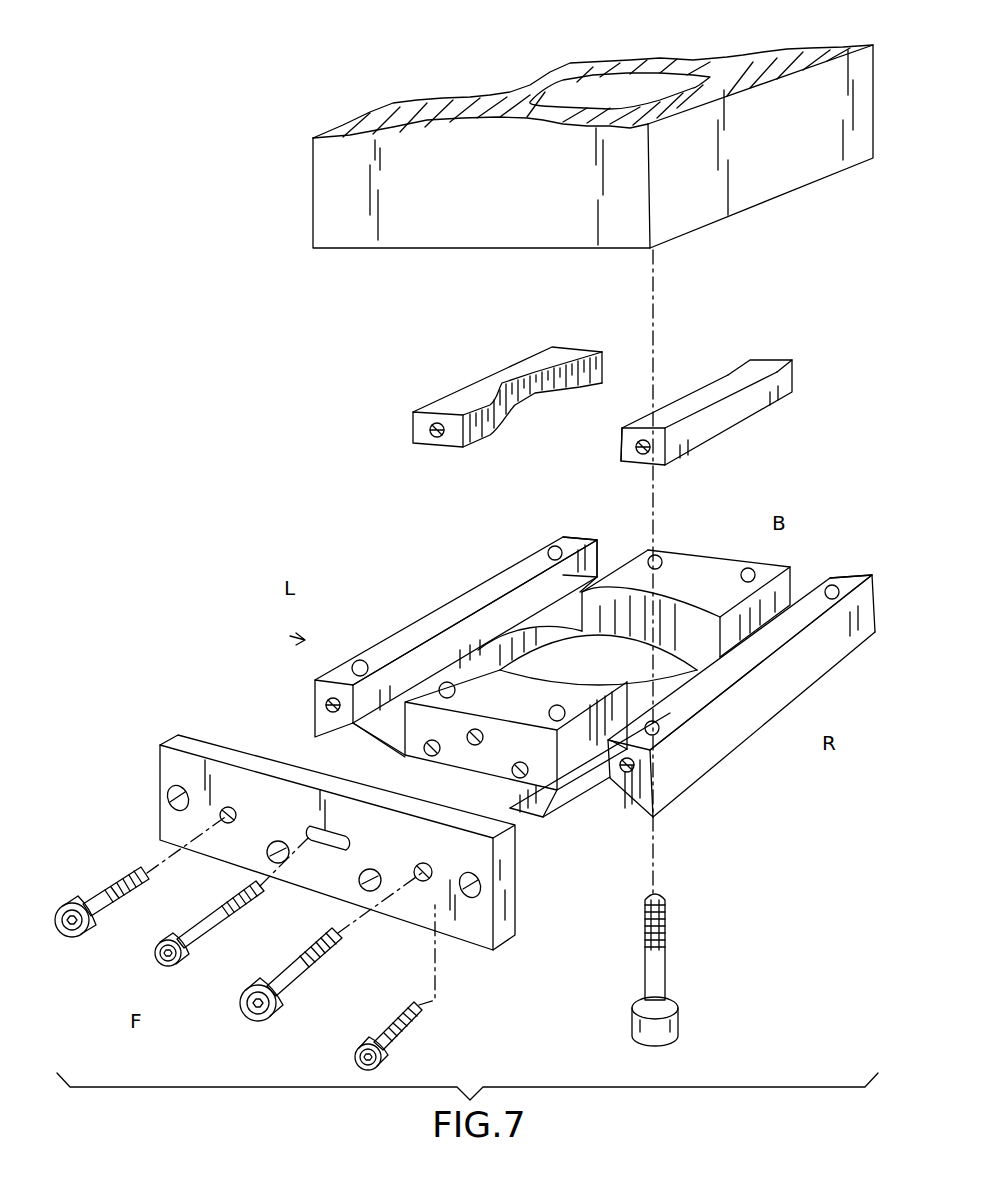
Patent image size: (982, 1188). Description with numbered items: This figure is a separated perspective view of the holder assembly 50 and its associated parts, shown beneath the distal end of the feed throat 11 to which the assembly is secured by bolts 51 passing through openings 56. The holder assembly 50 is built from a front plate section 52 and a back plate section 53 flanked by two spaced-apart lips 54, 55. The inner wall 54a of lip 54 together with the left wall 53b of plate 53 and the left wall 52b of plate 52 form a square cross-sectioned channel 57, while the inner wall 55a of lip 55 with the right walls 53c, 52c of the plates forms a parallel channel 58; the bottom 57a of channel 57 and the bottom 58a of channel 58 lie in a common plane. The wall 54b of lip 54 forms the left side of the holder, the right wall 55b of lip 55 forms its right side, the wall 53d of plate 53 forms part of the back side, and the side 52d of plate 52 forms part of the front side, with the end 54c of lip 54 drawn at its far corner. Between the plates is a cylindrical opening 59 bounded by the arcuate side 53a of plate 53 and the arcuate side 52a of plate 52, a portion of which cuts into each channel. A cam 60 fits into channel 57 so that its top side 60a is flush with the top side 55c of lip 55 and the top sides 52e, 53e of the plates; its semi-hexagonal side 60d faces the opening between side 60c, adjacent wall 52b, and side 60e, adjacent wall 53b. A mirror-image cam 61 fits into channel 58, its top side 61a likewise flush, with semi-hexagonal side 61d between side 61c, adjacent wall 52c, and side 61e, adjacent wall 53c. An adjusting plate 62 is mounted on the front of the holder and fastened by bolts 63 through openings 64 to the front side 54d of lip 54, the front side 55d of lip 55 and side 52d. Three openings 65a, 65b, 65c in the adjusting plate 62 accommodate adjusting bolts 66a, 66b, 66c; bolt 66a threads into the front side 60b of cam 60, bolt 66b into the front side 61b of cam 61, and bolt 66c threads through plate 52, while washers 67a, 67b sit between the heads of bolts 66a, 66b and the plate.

The feed throat 11 is at (497, 199).
The holder assembly 50 is at (283, 633).
The bolts 51 is at (666, 955).
The front plate section 52 is at (531, 709).
The arcuate side of plate 52 52a is at (585, 684).
The left wall of plate 52 52b is at (412, 734).
The right wall of plate 52 52c is at (555, 740).
The front side of plate 52 52d is at (477, 748).
The top side of plate 52 52e is at (662, 658).
The back plate section 53 is at (706, 580).
The arcuate side of plate 53 53a is at (638, 629).
The left wall of plate 53 53b is at (658, 553).
The right wall of plate 53 53c is at (792, 584).
The wall of plate 53 53d is at (790, 568).
The top side of plate 53 53e is at (748, 567).
The lip 54 is at (431, 634).
The inner wall of lip 54 54a is at (512, 612).
The wall of lip 54 54b is at (397, 628).
The right end of left bar 54c is at (545, 574).
The front side of lip 54 54d is at (318, 690).
The lip 55 is at (750, 703).
The inner wall of lip 55 55a is at (838, 578).
The right wall of lip 55 55b is at (838, 659).
The top side of lip 55 55c is at (770, 665).
The front side of lip 55 55d is at (632, 810).
The openings 56 is at (553, 546).
The channel 57 is at (495, 639).
The bottom of channel 57 57a is at (602, 556).
The channel 58 is at (590, 787).
The bottom of channel 58 58a is at (592, 800).
The cylindrical opening 59 is at (620, 667).
The cam 60 is at (525, 394).
The top side of cam 60 60a is at (560, 356).
The front side of cam 60 60b is at (450, 446).
The side of cam 60 60c is at (480, 438).
The side of cam 60 60d is at (528, 393).
The side of cam 60 60e is at (602, 370).
The cam 61 is at (694, 406).
The top side of cam 61 61a is at (660, 414).
The front side of cam 61 61b is at (623, 460).
The side of cam 61 61c is at (621, 430).
The side of cam 61 61d is at (695, 406).
The side of cam 61 61e is at (748, 362).
The adjusting plate 62 is at (339, 856).
The bolts 63 is at (405, 1040).
The openings 64 is at (172, 795).
The opening 65a is at (236, 810).
The opening 65b is at (421, 882).
The opening 65c is at (340, 848).
The adjusting bolt 66a is at (133, 897).
The adjusting bolt 66b is at (315, 961).
The adjusting bolt 66c is at (164, 966).
The washer 67a is at (85, 933).
The washer 67b is at (277, 1012).